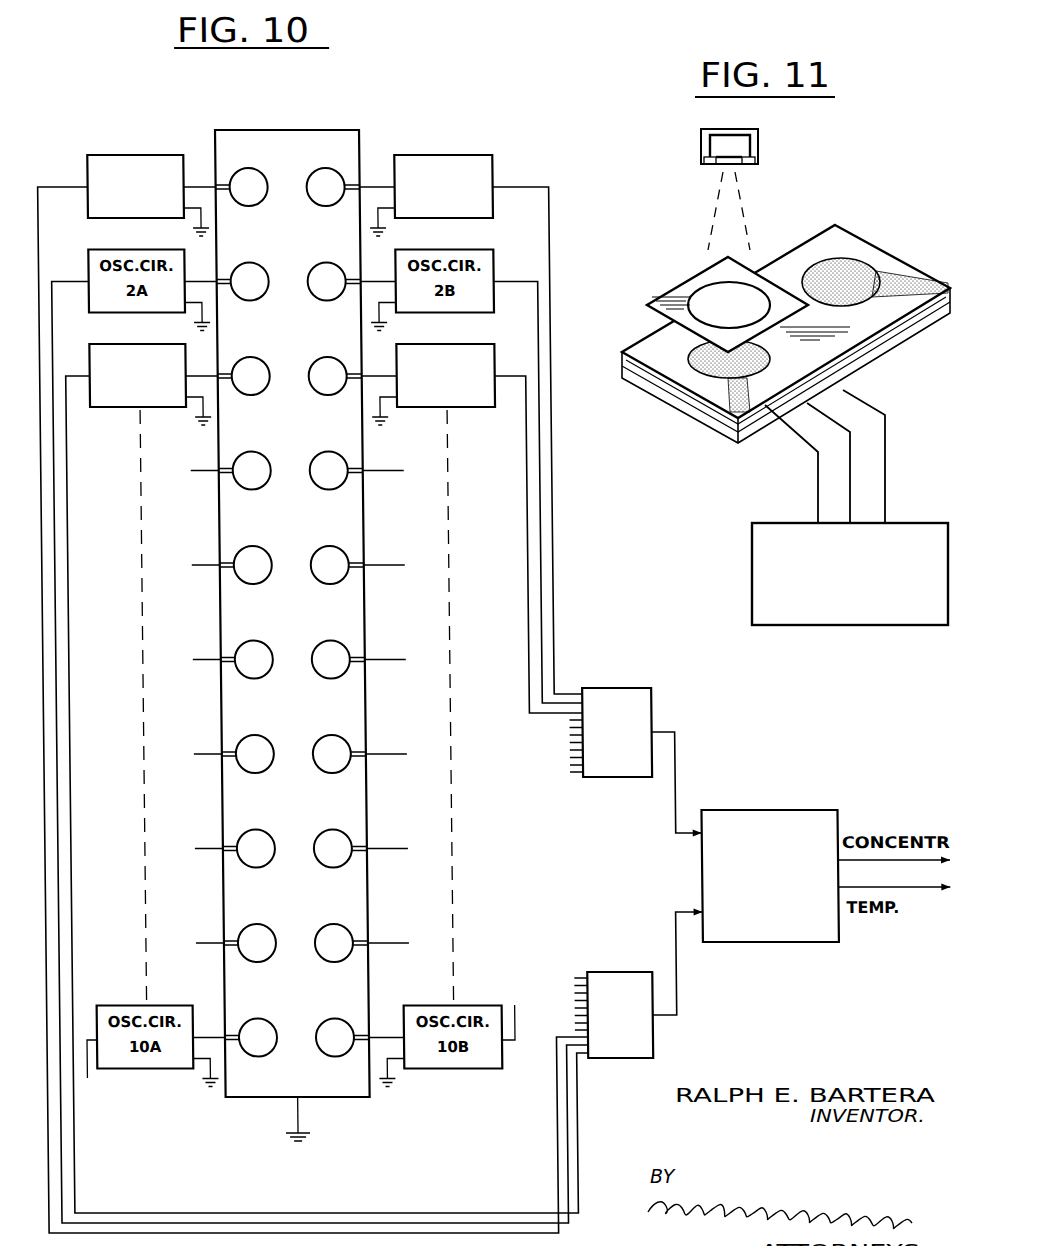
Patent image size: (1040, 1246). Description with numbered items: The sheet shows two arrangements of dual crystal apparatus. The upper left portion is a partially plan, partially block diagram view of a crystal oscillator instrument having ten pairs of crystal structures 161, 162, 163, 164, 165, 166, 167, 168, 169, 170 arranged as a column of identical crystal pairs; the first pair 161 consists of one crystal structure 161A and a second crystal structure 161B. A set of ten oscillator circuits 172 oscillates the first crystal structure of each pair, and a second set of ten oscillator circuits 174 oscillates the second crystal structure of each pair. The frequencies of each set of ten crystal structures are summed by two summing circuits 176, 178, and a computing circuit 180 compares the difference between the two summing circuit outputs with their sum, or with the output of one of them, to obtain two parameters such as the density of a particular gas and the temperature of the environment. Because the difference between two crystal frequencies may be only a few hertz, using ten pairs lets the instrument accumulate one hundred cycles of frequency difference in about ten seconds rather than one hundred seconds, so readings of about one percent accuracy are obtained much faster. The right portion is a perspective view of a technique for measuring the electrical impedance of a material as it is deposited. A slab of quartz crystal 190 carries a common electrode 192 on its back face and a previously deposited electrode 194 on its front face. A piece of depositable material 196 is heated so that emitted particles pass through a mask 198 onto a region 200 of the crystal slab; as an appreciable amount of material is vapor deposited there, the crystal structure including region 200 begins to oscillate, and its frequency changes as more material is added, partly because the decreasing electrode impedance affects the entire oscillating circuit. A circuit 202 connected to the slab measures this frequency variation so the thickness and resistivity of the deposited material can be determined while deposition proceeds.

In FIG. 10, the crystal pair 161 is at (303, 164).
In FIG. 10, the first crystal structure 161A is at (240, 167).
In FIG. 10, the second crystal structure 161B is at (328, 167).
In FIG. 10, the crystal pair 162 is at (303, 257).
In FIG. 10, the crystal pair 163 is at (303, 351).
In FIG. 10, the crystal pair 164 is at (303, 446).
In FIG. 10, the crystal pair 165 is at (303, 540).
In FIG. 10, the crystal pair 166 is at (303, 635).
In FIG. 10, the crystal pair 167 is at (303, 729).
In FIG. 10, the crystal pair 168 is at (303, 824).
In FIG. 10, the crystal pair 169 is at (303, 918).
In FIG. 10, the crystal pair 170 is at (303, 1013).
In FIG. 10, the oscillator circuits 172 is at (127, 152).
In FIG. 10, the oscillator circuits 174 is at (451, 150).
In FIG. 10, the summing circuit 176 is at (611, 980).
In FIG. 10, the summing circuit 178 is at (611, 697).
In FIG. 10, the computing circuit 180 is at (757, 818).
In FIG. 11, the quartz crystal slab 190 is at (718, 415).
In FIG. 11, the common electrode 192 is at (905, 348).
In FIG. 11, the previously deposited electrode 194 is at (855, 270).
In FIG. 11, the depositable material 196 is at (737, 163).
In FIG. 11, the mask 198 is at (672, 293).
In FIG. 11, the crystal region 200 is at (707, 365).
In FIG. 11, the measuring circuit 202 is at (754, 557).